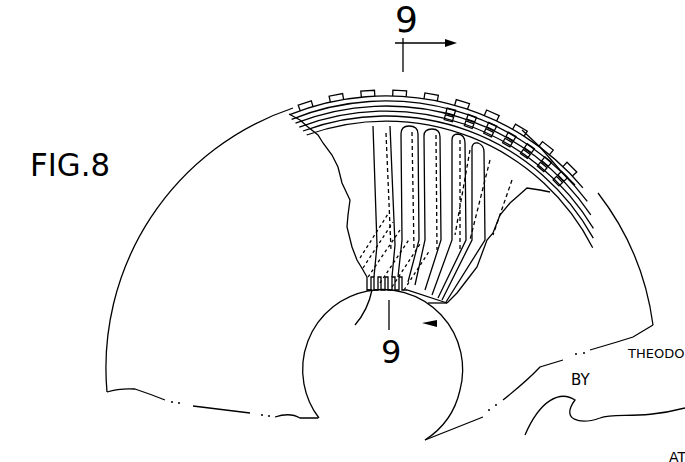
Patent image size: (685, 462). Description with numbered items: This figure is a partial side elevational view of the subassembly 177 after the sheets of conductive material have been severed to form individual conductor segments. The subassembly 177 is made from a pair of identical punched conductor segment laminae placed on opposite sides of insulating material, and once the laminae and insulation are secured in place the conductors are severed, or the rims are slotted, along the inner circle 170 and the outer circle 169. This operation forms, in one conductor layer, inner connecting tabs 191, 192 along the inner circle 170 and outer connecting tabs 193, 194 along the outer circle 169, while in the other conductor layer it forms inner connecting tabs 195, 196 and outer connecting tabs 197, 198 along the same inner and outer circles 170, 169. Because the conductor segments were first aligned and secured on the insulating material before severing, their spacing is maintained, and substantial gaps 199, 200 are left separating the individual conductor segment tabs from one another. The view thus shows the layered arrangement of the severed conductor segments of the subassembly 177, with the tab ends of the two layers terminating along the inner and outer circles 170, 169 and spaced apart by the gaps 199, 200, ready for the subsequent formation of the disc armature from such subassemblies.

The outer circle 169 is at (605, 193).
The inner circle 170 is at (455, 390).
The subassembly 177 is at (104, 302).
The inner connecting tab 191 is at (428, 303).
The inner connecting tab 192 is at (437, 324).
The outer connecting tab 193 is at (380, 90).
The outer connecting tab 194 is at (402, 97).
The inner connecting tab 195 is at (367, 285).
The inner connecting tab 196 is at (345, 315).
The outer connecting tab 197 is at (500, 118).
The outer connecting tab 198 is at (522, 130).
The gap 199 is at (395, 292).
The gap 200 is at (493, 117).